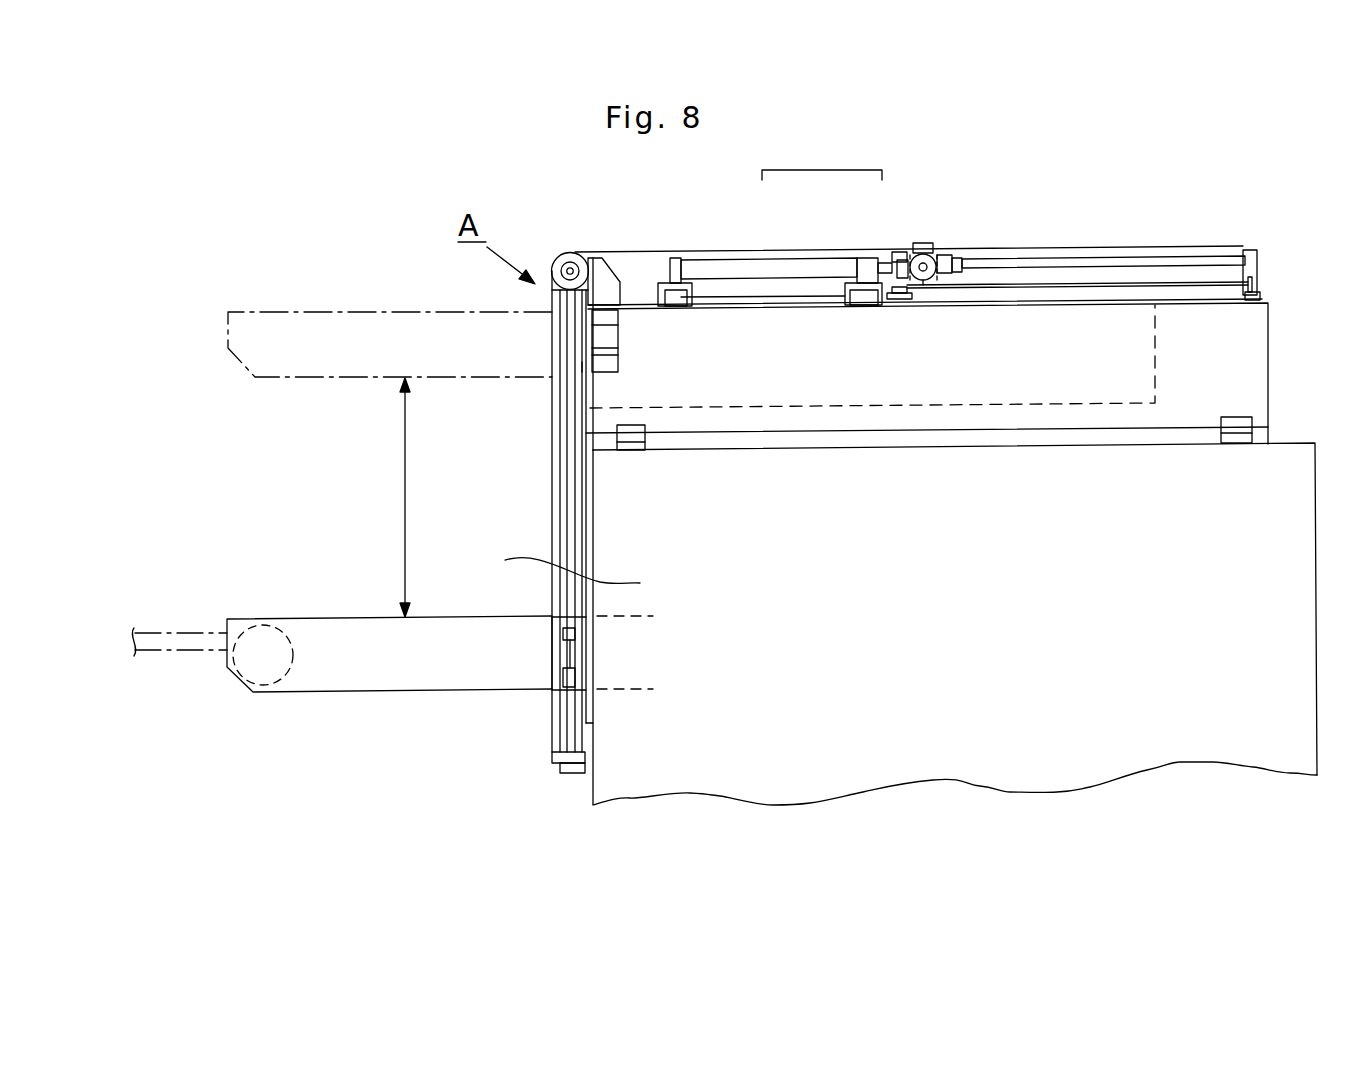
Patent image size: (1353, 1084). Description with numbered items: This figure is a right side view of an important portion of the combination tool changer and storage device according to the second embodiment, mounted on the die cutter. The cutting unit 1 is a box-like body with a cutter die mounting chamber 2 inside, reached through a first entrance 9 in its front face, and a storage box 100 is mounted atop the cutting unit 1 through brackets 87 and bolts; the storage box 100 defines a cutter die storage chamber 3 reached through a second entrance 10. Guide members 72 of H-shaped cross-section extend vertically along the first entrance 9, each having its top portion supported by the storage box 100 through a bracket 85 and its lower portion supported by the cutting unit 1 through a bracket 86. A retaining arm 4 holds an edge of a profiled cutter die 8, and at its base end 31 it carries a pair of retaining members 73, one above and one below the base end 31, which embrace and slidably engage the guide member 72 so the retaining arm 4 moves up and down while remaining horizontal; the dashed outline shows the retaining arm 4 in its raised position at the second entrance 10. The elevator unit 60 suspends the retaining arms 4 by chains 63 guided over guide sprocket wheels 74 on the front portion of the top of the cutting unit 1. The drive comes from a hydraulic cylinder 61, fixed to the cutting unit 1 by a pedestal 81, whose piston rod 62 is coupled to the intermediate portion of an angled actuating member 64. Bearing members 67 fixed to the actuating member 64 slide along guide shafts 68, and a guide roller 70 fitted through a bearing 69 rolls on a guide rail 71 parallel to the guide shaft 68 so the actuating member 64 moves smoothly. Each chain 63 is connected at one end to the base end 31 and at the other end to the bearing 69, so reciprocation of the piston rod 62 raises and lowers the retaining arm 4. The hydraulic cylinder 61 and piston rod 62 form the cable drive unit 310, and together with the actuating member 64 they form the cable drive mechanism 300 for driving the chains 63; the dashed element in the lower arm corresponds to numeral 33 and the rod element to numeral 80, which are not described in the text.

The cutting unit 1 is at (1145, 745).
The cutter die mounting chamber 2 is at (560, 562).
The cutter die storage chamber 3 is at (1075, 385).
The retaining arm 4 is at (438, 378).
The profiled cutter die 8 is at (196, 652).
The first entrance 9 is at (540, 660).
The second entrance 10 is at (582, 368).
The base end 31 is at (562, 643).
The roller 33 is at (288, 625).
The elevator unit 60 is at (633, 248).
The hydraulic cylinder 61 is at (752, 265).
The piston rod 62 is at (876, 257).
The chain 63 is at (672, 258).
The actuating member 64 is at (900, 300).
The bearing member 67 is at (950, 253).
The guide shaft 68 is at (1115, 263).
The bearing 69 is at (926, 245).
The guide roller 70 is at (937, 280).
The guide rail 71 is at (1043, 283).
The guide member 72 is at (576, 523).
The retaining member 73 is at (572, 632).
The guide sprocket wheel 74 is at (566, 262).
The piston rod 80 is at (695, 300).
The pedestal 81 is at (845, 300).
The bracket 85 is at (614, 341).
The bracket 86 is at (575, 768).
The bracket 87 is at (634, 442).
The storage box 100 is at (1255, 358).
The cable drive mechanism 300 is at (904, 232).
The cable drive unit 310 is at (822, 157).